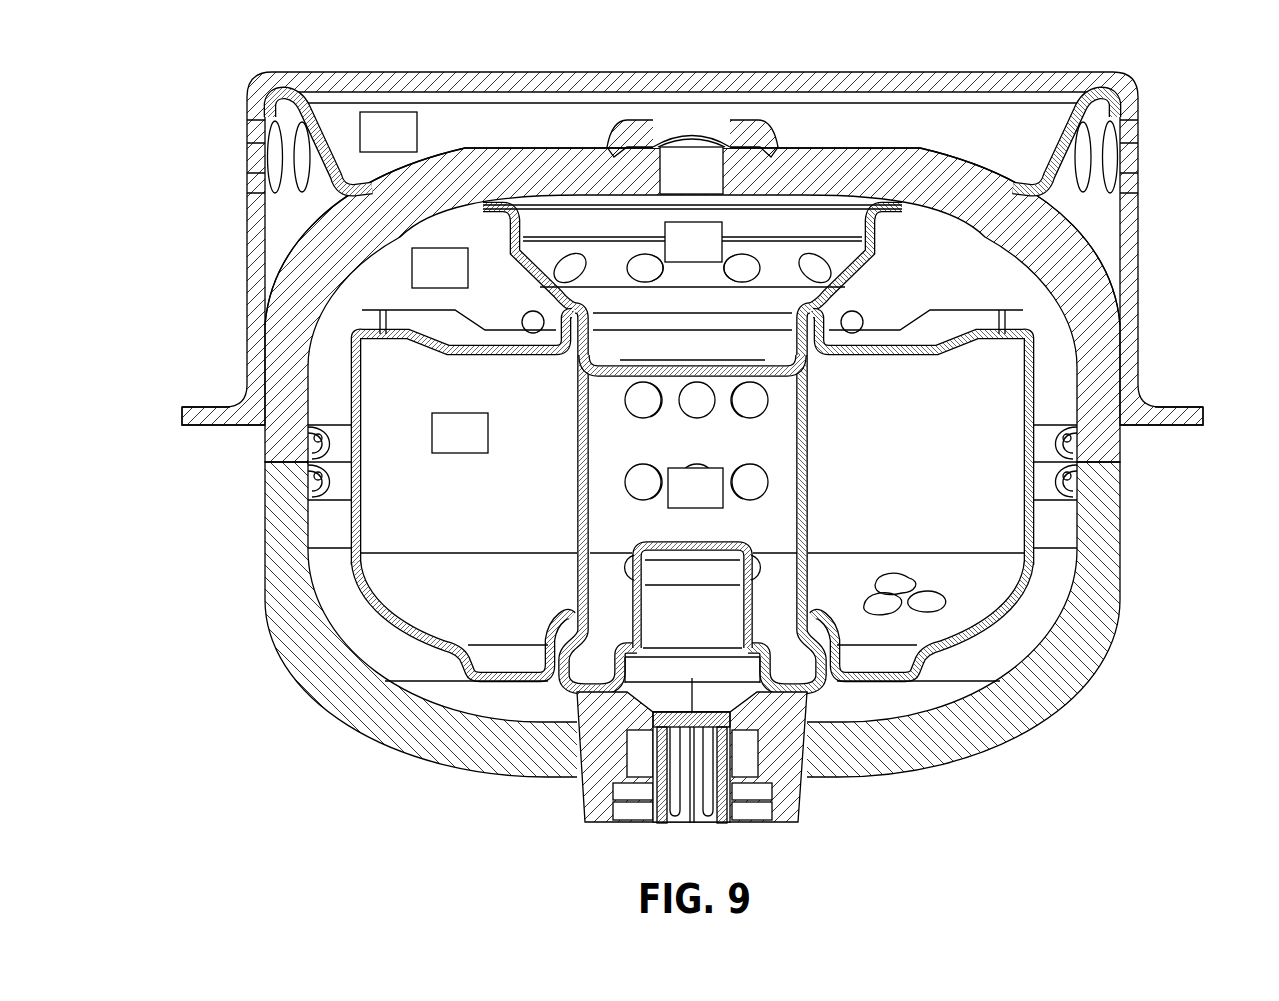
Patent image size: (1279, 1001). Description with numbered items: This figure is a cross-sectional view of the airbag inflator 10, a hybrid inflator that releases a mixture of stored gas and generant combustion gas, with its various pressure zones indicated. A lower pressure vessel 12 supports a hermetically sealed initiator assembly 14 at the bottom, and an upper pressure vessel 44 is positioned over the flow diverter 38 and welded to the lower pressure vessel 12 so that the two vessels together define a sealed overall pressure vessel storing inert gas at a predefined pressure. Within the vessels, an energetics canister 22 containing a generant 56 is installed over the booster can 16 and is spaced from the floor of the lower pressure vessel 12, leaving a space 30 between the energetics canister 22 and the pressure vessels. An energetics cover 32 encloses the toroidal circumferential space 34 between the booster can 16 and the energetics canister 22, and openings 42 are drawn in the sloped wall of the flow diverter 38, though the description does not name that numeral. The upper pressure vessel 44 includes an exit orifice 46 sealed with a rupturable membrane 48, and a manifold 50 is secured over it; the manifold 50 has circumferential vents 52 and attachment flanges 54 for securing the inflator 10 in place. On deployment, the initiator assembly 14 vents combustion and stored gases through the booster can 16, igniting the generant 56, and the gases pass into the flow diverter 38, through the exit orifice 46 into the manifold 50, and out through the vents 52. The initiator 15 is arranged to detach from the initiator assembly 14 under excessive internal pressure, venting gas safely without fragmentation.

The airbag inflator 10 is at (671, 430).
The lower pressure vessel 12 is at (285, 553).
The initiator assembly 14 is at (822, 810).
The initiator 15 is at (728, 692).
The booster can 16 is at (600, 583).
The energetics canister 22 is at (355, 566).
The space 30 is at (330, 347).
The energetics cover 32 is at (1040, 355).
The circumferential space 34 is at (387, 420).
The flow diverter 38 is at (890, 258).
The holes 42 is at (822, 282).
The upper pressure vessel 44 is at (320, 260).
The exit orifice 46 is at (712, 175).
The rupturable membrane 48 is at (750, 105).
The manifold 50 is at (570, 80).
The vents 52 is at (300, 157).
The attachment flanges 54 is at (203, 418).
The generant 56 is at (935, 600).